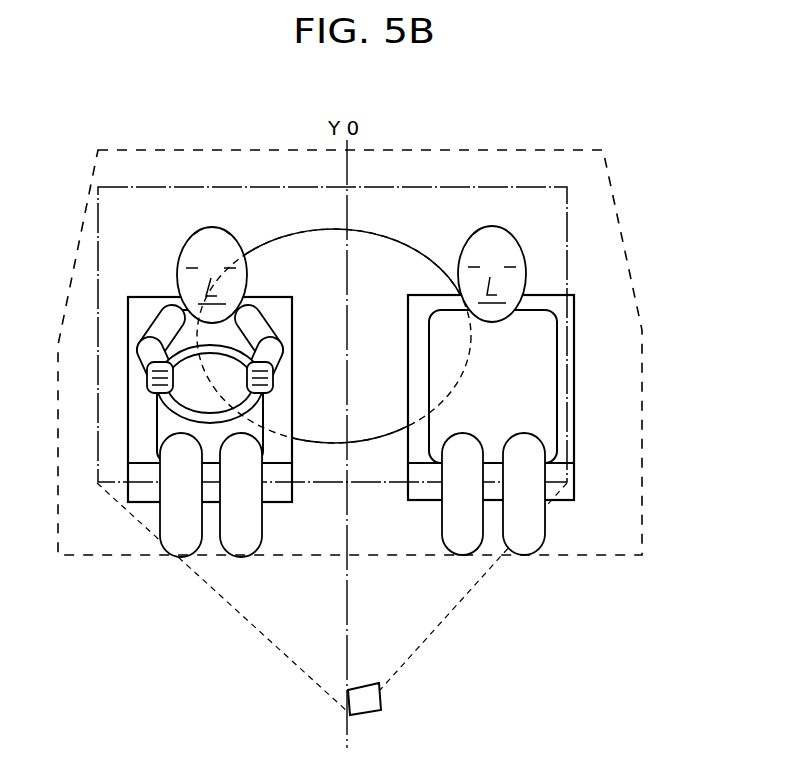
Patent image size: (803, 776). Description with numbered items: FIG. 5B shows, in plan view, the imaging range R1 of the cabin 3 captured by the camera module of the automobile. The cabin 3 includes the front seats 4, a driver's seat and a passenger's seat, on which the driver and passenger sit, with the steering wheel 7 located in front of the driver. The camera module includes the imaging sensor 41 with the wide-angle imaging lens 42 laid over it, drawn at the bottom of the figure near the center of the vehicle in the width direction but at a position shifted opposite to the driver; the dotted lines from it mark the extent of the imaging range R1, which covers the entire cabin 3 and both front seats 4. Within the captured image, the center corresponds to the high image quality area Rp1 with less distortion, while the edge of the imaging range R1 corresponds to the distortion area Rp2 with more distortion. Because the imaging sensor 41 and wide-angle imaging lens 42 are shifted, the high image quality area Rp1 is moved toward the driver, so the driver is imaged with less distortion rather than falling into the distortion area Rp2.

The cabin 3 is at (582, 176).
The front seats 4 is at (128, 318).
The steering wheel 7 is at (165, 402).
The imaging sensor 41 is at (332, 600).
The wide-angle imaging lens 42 is at (383, 703).
The imaging range R1 is at (332, 284).
The high image quality area Rp1 is at (375, 278).
The distortion area Rp2 is at (377, 205).